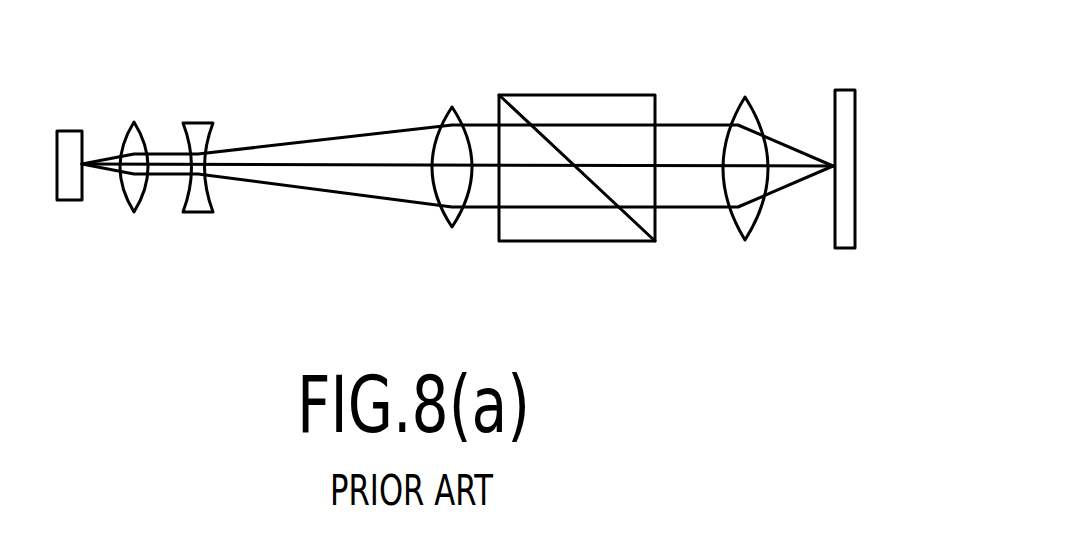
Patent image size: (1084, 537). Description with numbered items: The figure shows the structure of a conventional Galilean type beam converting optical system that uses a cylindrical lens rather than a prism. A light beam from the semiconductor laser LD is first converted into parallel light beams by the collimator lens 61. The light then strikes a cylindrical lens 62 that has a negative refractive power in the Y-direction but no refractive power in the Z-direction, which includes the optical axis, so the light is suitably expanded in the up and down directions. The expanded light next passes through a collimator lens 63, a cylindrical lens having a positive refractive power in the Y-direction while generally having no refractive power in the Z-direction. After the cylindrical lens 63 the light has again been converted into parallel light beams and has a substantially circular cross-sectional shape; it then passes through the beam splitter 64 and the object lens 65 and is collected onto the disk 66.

The semiconductor laser LD is at (68, 200).
The collimator lens 61 is at (135, 122).
The cylindrical lens 62 is at (203, 122).
The collimator lens 63 is at (452, 107).
The beam splitter 64 is at (586, 107).
The object lens 65 is at (747, 235).
The disk 66 is at (843, 88).